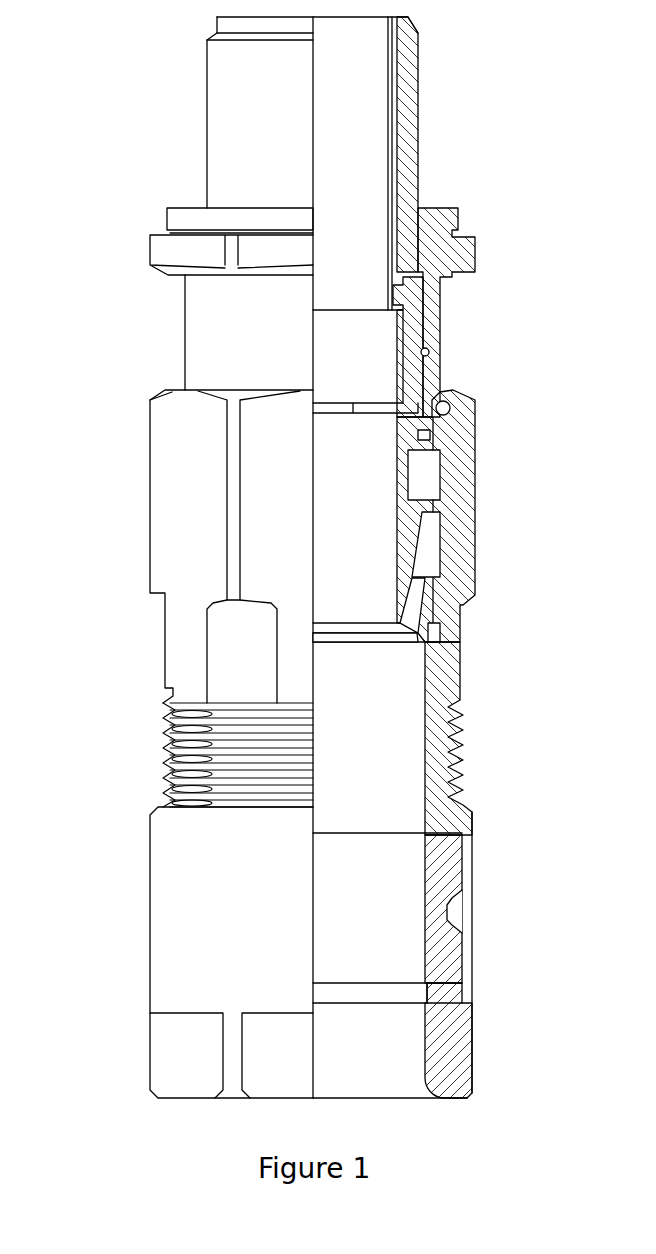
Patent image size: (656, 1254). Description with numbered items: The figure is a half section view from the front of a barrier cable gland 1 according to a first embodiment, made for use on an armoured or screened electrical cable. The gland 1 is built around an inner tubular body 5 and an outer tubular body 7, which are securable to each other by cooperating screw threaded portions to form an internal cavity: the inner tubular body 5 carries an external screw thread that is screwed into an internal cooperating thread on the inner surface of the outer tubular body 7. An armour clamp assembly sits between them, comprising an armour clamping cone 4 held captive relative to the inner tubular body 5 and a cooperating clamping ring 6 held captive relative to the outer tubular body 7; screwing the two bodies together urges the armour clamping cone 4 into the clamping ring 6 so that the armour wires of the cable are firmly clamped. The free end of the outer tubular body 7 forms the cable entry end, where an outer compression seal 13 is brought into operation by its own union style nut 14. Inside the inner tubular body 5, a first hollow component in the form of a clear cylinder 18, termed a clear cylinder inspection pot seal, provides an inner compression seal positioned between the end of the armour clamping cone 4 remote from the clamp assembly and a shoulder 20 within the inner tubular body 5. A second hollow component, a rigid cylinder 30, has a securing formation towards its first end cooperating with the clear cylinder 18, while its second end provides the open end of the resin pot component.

The gland 1 is at (82, 103).
The rigid cylinder 30 is at (390, 113).
The inner tubular body 5 is at (403, 183).
The shoulder 20 is at (415, 272).
The clear cylinder 18 is at (412, 328).
The armour clamping cone 4 is at (400, 485).
The clamping ring 6 is at (427, 602).
The outer tubular body 7 is at (437, 665).
The outer compression seal 13 is at (437, 878).
The union style nut 14 is at (455, 1057).